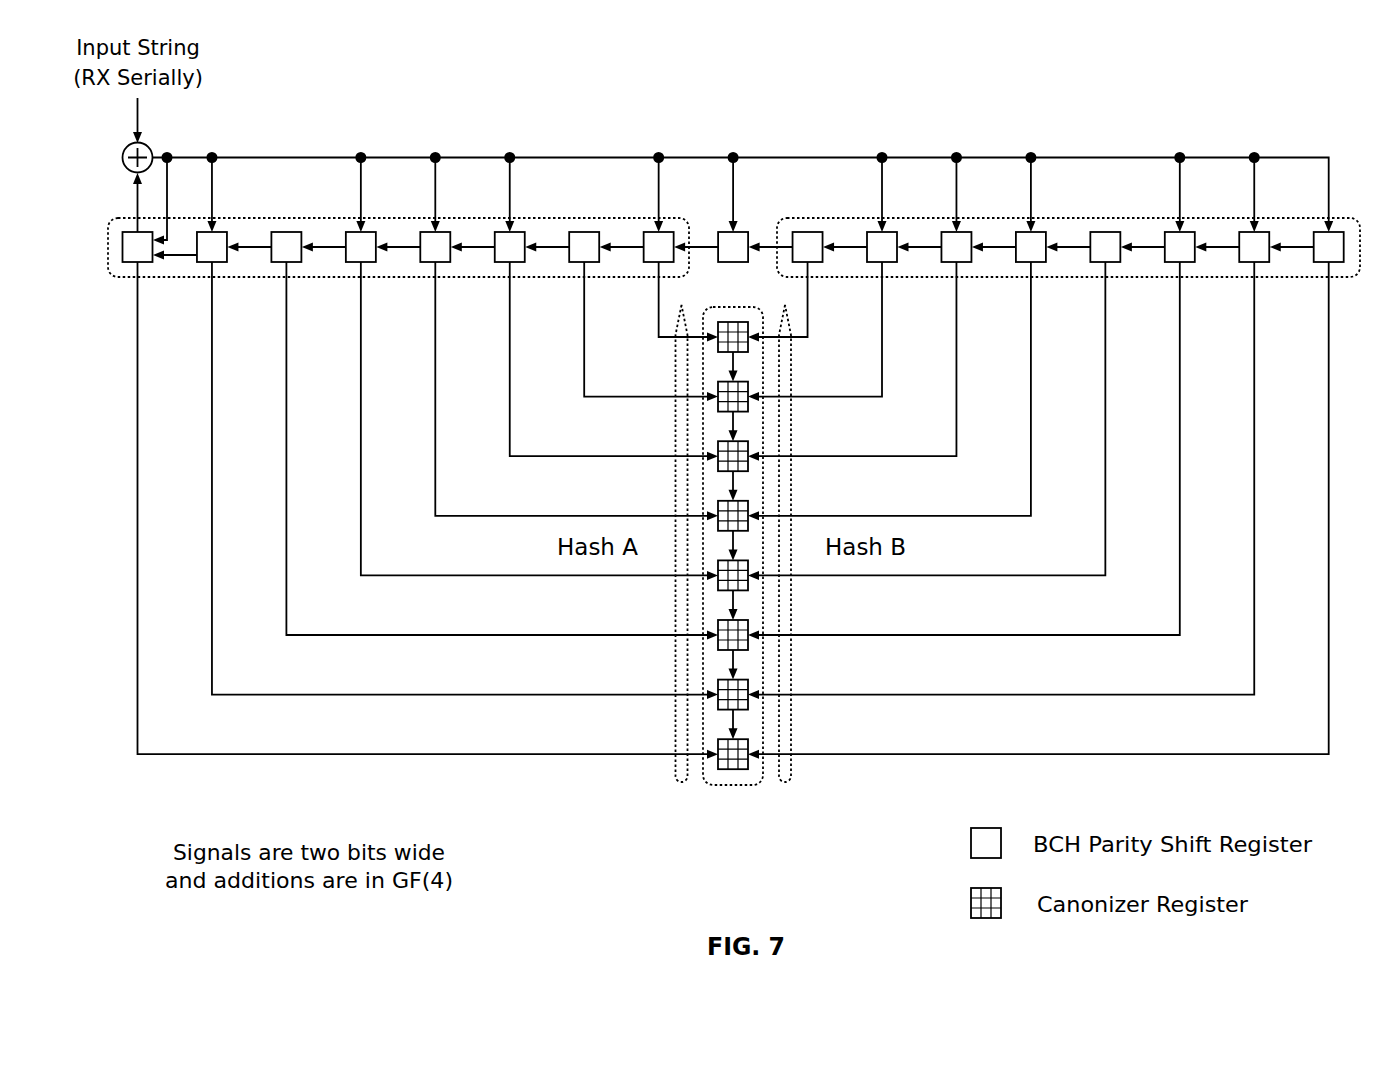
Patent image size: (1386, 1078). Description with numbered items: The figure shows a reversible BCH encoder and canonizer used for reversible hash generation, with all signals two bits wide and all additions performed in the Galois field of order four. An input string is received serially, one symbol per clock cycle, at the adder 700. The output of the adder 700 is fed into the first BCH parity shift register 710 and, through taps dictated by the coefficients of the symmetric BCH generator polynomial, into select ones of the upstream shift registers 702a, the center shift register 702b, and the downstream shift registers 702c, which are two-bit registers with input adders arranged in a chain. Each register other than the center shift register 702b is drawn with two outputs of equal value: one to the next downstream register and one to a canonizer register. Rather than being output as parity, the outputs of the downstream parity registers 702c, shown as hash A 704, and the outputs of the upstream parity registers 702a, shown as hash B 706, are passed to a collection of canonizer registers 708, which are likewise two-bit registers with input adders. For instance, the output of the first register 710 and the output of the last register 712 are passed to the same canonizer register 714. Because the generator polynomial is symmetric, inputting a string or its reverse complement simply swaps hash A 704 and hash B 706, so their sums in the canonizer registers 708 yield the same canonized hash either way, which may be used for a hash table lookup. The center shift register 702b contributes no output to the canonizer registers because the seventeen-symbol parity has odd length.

The adder 700 is at (152, 146).
The upstream shift registers 702a is at (1105, 217).
The center shift register 702b is at (740, 231).
The downstream shift registers 702c is at (585, 217).
The hash A 704 is at (672, 777).
The hash B 706 is at (790, 777).
The canonizer registers 708 is at (792, 578).
The first BCH parity shift register 710 is at (1334, 231).
The last register 712 is at (132, 263).
The canonizer register 714 is at (751, 749).